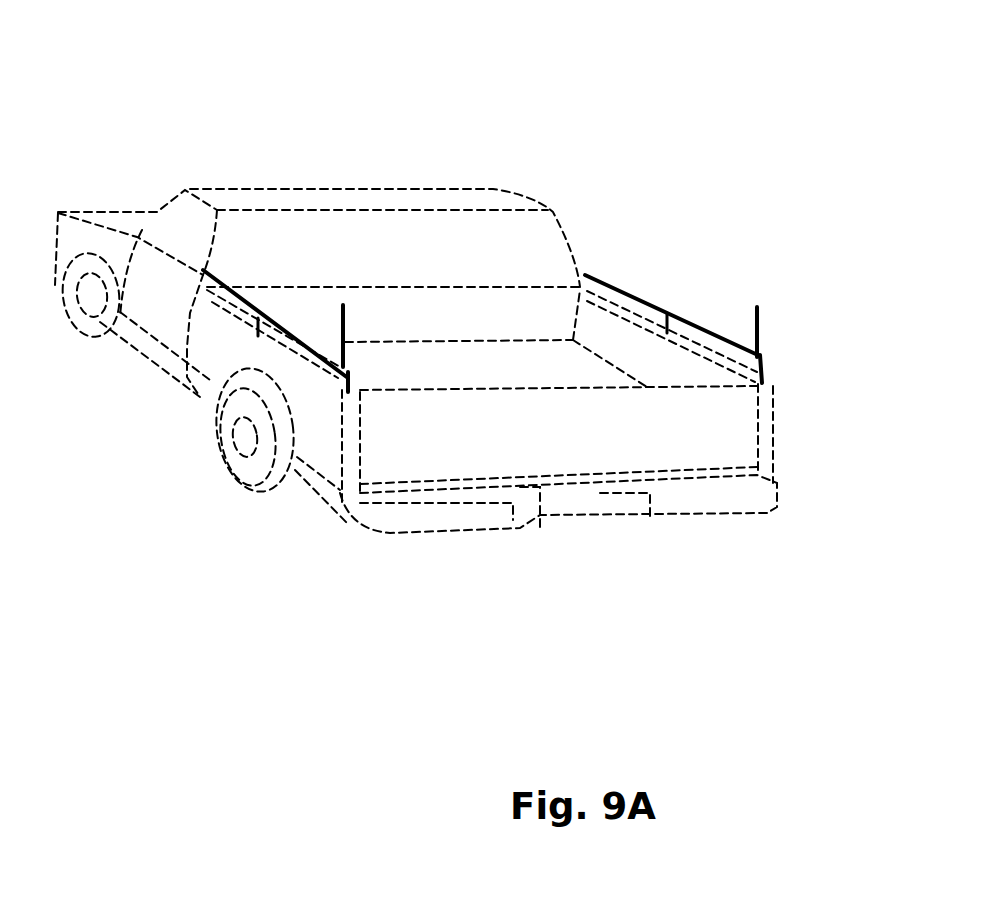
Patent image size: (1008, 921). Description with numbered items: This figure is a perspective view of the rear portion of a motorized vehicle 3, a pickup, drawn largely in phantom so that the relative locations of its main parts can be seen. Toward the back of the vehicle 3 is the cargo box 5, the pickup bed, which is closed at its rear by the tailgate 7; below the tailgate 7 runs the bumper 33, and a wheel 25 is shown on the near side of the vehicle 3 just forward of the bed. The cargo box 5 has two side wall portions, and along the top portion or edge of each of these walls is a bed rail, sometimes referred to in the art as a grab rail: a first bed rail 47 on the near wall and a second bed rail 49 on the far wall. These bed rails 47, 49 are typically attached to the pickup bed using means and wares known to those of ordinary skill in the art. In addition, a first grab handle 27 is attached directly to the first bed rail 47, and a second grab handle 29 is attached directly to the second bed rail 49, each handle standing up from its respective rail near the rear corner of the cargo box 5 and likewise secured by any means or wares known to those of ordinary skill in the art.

The vehicle 3 is at (328, 110).
The cargo box 5 is at (540, 367).
The tailgate 7 is at (692, 433).
The wheel 25 is at (240, 463).
The first grab handle 27 is at (347, 325).
The second grab handle 29 is at (757, 333).
The bumper 33 is at (680, 505).
The first bed rail 47 is at (287, 328).
The second bed rail 49 is at (680, 318).